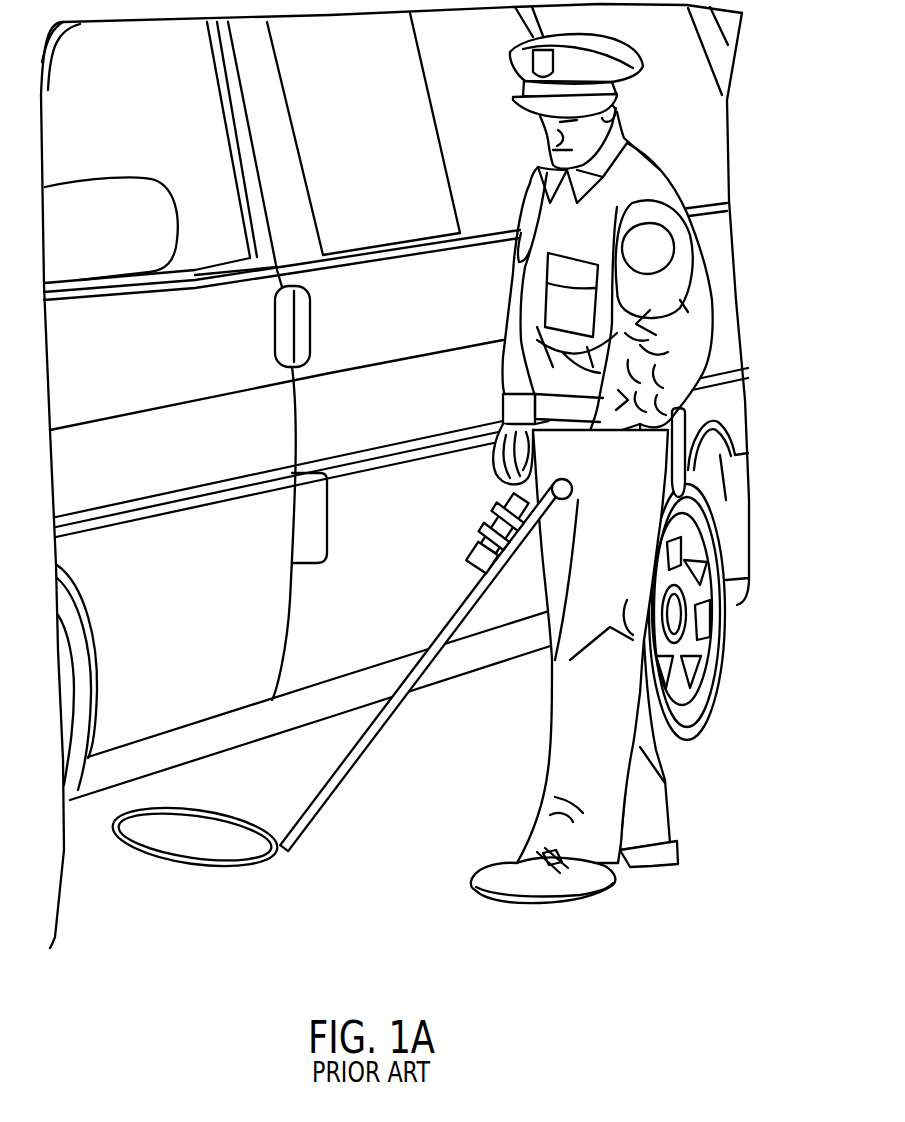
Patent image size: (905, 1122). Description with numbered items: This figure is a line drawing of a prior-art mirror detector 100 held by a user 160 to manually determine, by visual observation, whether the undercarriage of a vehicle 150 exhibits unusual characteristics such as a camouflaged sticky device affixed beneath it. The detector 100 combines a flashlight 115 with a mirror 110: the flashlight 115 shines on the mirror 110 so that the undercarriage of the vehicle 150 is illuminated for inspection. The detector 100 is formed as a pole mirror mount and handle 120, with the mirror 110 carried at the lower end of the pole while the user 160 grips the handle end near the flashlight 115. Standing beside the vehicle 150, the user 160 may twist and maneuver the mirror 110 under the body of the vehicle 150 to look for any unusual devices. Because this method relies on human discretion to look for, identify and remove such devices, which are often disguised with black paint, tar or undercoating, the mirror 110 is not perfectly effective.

The mirror detector 100 is at (340, 706).
The mirror 110 is at (213, 853).
The flashlight 115 is at (507, 522).
The pole mirror mount and handle 120 is at (448, 630).
The vehicle 150 is at (720, 249).
The user 160 is at (697, 318).